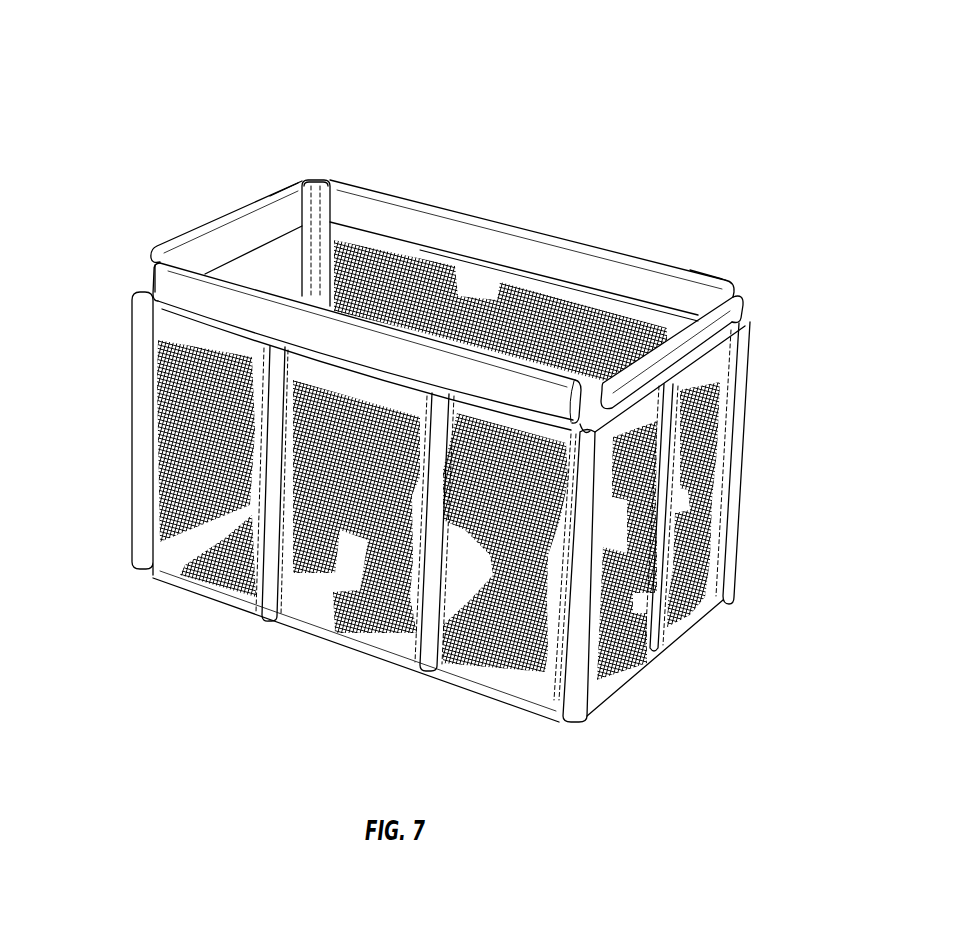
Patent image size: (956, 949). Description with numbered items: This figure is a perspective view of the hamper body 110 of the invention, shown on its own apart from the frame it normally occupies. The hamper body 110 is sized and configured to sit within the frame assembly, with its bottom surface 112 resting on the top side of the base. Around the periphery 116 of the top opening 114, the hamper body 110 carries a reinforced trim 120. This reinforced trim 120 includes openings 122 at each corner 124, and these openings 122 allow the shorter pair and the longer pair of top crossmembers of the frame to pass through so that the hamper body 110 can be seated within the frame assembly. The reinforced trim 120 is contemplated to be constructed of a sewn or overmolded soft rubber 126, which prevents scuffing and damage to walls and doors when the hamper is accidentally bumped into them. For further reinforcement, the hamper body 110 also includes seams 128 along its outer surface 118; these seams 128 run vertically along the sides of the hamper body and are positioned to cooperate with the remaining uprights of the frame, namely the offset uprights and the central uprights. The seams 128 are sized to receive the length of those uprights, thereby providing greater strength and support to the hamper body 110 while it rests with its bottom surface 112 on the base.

The hamper body 110 is at (575, 90).
The bottom surface 112 is at (508, 700).
The top opening 114 is at (470, 290).
The periphery 116 is at (222, 220).
The outer surface 118 is at (345, 555).
The reinforced trim 120 is at (255, 205).
The openings 122 is at (154, 292).
The corner 124 is at (330, 178).
The soft rubber 126 is at (281, 198).
The seams 128 is at (133, 440).